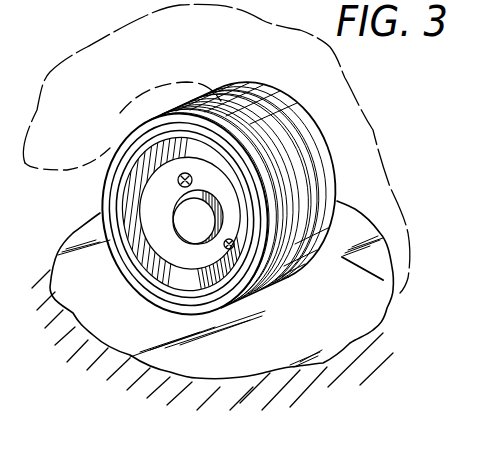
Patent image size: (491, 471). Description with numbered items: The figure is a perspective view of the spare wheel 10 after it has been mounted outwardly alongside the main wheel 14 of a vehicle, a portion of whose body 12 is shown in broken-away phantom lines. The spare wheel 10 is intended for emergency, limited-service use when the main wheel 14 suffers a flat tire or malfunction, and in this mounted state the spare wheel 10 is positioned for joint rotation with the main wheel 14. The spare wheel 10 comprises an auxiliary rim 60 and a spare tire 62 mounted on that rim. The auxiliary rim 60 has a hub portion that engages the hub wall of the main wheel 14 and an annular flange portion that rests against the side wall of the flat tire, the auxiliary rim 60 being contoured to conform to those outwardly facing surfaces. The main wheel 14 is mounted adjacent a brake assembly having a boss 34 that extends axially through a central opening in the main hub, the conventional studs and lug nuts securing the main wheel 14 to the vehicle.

The spare wheel 10 is at (93, 188).
The body 12 is at (275, 22).
The main wheel 14 is at (217, 77).
The boss 34 is at (190, 228).
The auxiliary rim 60 is at (245, 258).
The spare tire 62 is at (113, 132).